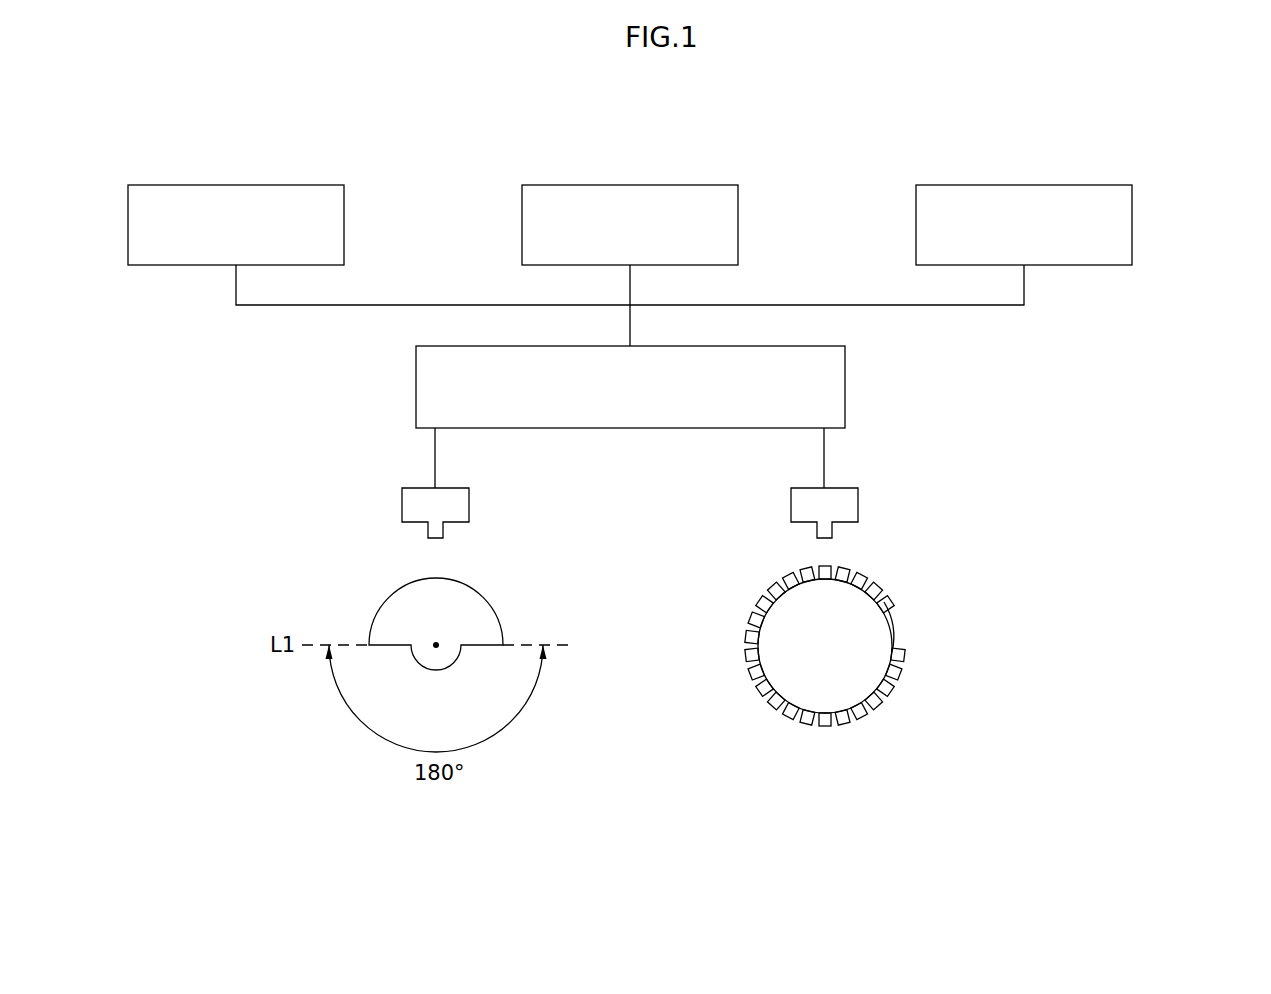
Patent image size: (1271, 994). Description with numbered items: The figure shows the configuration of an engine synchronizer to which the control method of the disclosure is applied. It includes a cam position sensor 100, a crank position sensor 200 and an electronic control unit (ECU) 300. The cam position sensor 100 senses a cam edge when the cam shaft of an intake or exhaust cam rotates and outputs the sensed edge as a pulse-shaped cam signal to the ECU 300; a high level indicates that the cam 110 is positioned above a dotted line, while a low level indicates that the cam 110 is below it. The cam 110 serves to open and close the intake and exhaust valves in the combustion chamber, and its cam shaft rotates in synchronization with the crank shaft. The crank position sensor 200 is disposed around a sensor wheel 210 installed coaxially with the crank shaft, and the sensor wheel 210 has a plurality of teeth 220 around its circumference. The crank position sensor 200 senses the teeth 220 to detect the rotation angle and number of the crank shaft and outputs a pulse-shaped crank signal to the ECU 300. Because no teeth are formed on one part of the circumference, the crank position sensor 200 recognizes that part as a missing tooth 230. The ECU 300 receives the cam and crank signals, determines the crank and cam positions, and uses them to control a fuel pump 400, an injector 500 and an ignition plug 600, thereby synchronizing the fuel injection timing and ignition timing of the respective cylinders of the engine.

The cam position sensor 100 is at (402, 505).
The cam 110 is at (495, 613).
The crank position sensor 200 is at (858, 505).
The sensor wheel 210 is at (752, 582).
The teeth 220 is at (903, 657).
The missing tooth 230 is at (897, 622).
The electronic control unit (ECU) 300 is at (845, 385).
The fuel pump 400 is at (344, 223).
The injector 500 is at (738, 223).
The ignition plug 600 is at (1132, 223).